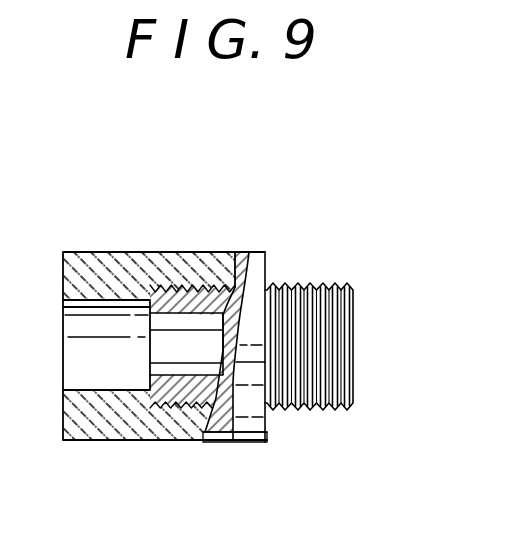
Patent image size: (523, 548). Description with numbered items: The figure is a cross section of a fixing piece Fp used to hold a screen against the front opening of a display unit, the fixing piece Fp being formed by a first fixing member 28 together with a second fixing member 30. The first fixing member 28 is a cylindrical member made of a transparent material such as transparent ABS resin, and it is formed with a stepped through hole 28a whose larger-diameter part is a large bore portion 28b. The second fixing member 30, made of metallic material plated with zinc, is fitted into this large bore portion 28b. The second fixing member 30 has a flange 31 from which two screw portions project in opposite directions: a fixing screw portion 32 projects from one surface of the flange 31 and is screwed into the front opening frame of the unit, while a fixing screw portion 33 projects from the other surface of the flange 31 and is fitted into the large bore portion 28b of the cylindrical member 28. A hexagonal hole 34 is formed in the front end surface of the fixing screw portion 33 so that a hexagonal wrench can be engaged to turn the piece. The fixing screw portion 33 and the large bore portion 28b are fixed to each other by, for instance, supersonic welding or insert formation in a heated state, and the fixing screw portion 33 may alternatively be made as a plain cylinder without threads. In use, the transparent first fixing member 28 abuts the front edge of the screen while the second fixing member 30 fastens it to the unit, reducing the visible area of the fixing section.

The first fixing member 28 is at (178, 252).
The stepped through hole 28a is at (108, 392).
The large bore portion 28b is at (208, 428).
The second fixing member 30 is at (268, 252).
The flange 31 is at (250, 443).
The fixing screw portion 32 is at (354, 320).
The fixing screw portion 33 is at (158, 256).
The hexagonal hole 34 is at (181, 352).
The fixing piece Fp is at (158, 203).